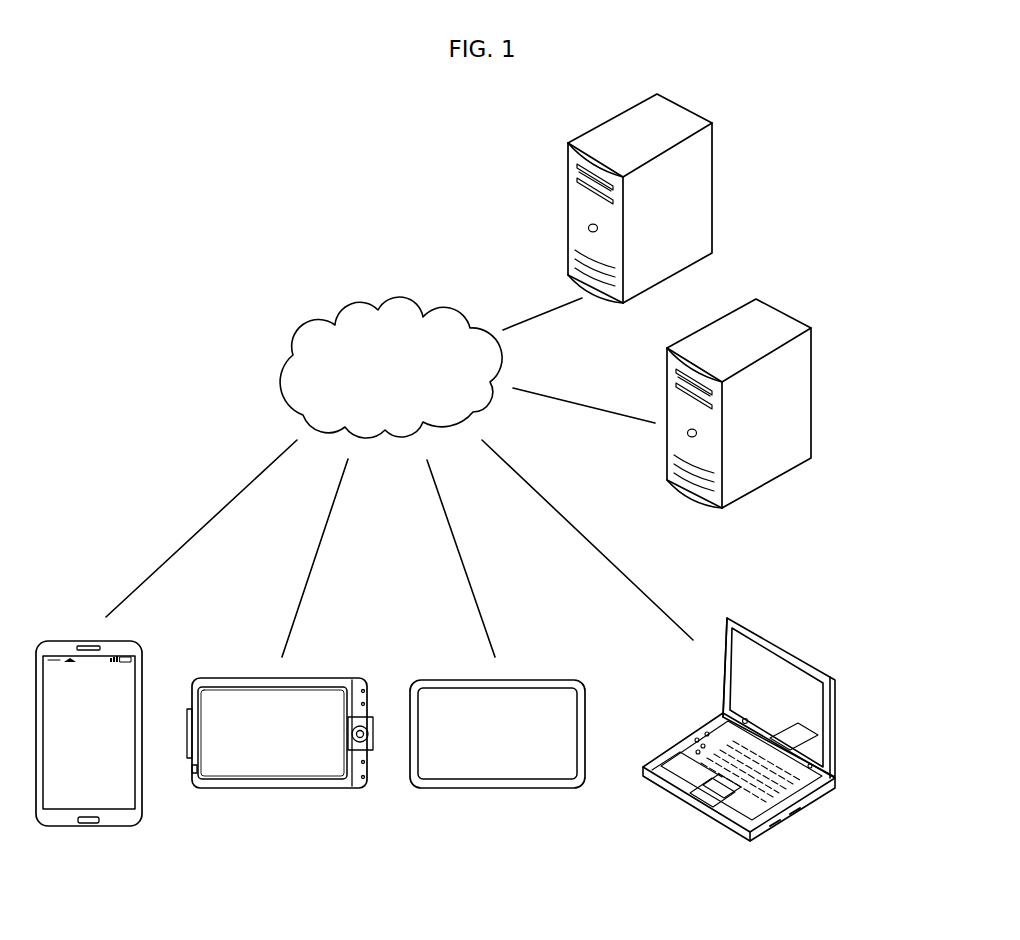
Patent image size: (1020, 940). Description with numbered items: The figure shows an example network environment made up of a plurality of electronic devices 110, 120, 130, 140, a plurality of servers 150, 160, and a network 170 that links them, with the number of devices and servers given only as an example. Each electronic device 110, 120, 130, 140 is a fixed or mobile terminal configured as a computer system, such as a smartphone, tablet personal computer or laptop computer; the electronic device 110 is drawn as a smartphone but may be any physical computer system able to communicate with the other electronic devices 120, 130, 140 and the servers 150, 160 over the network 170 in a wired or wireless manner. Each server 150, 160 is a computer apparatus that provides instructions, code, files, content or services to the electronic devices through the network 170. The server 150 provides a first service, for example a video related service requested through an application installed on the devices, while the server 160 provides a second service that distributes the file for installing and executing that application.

The electronic device 110 is at (88, 827).
The electronic device 120 is at (278, 789).
The electronic device 130 is at (498, 790).
The electronic device 140 is at (835, 728).
The server 150 is at (809, 392).
The server 160 is at (712, 188).
The network 170 is at (396, 299).